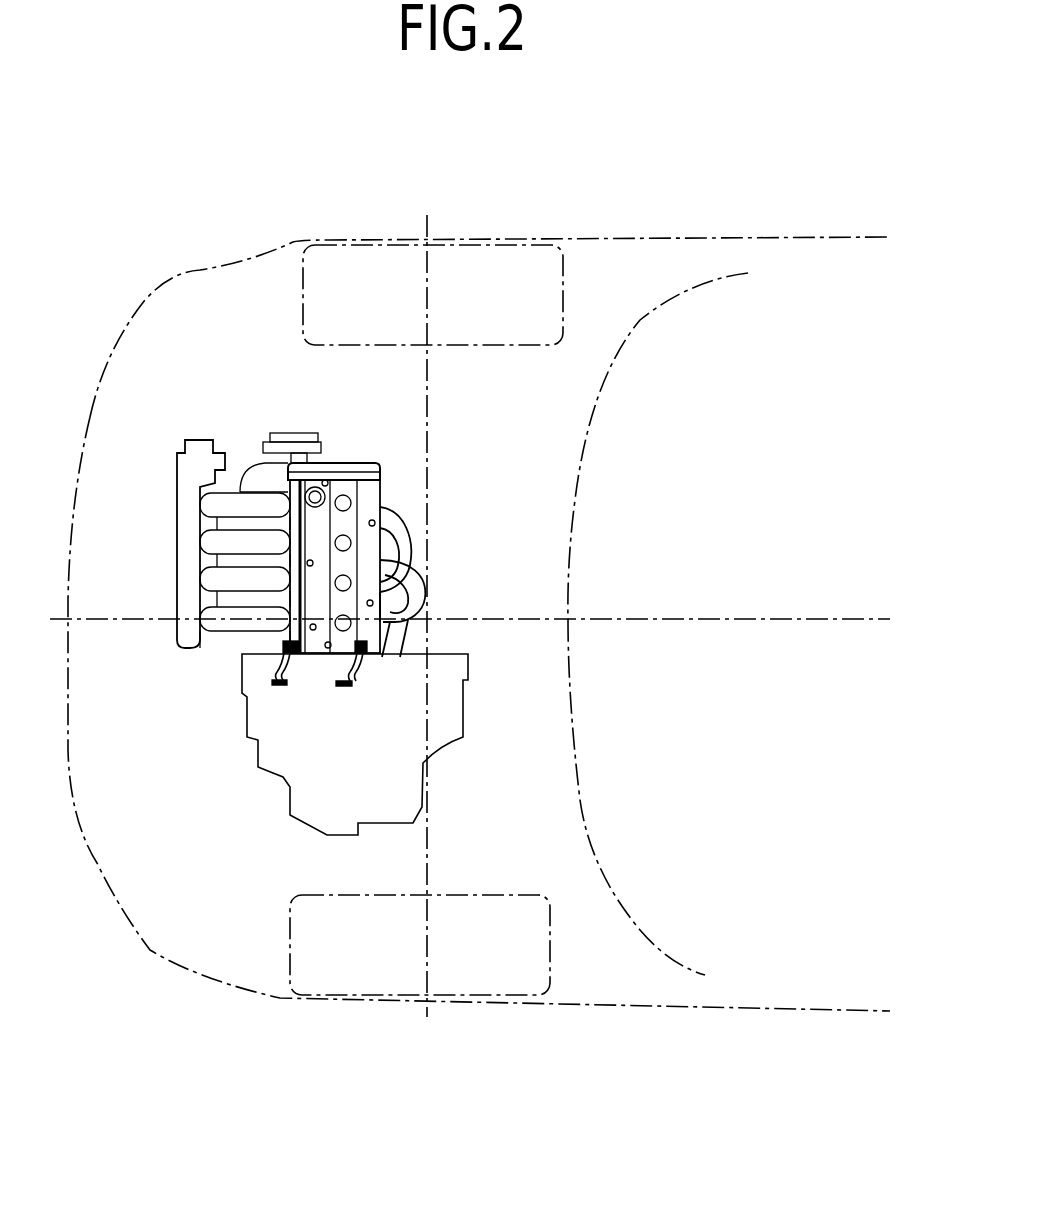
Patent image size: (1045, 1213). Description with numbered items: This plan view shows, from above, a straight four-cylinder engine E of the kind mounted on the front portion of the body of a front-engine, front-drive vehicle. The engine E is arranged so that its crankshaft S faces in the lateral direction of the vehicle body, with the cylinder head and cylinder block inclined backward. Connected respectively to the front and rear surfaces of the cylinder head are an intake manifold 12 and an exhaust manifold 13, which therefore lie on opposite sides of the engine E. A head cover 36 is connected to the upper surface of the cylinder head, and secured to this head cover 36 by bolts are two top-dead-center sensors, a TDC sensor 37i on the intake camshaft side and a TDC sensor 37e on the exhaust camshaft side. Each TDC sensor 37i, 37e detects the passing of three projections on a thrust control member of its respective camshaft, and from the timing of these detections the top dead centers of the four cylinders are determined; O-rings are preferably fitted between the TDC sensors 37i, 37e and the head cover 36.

The engine E is at (403, 481).
The crankshaft S is at (294, 450).
The intake manifold 12 is at (205, 648).
The exhaust manifold 13 is at (412, 553).
The head cover 36 is at (347, 487).
The TDC sensor 37i is at (292, 655).
The TDC sensor 37e is at (365, 655).